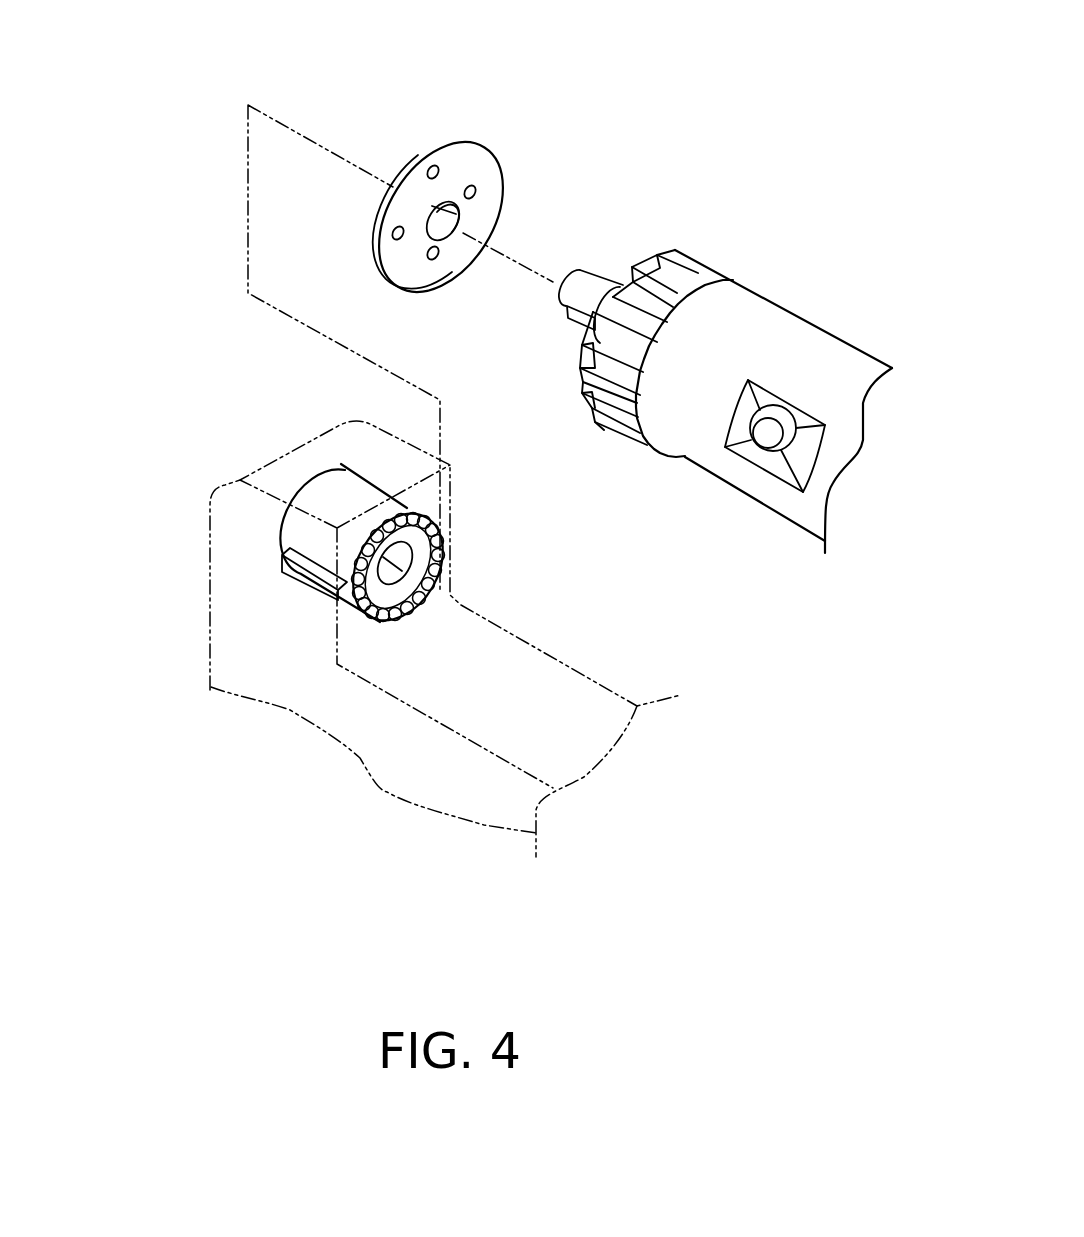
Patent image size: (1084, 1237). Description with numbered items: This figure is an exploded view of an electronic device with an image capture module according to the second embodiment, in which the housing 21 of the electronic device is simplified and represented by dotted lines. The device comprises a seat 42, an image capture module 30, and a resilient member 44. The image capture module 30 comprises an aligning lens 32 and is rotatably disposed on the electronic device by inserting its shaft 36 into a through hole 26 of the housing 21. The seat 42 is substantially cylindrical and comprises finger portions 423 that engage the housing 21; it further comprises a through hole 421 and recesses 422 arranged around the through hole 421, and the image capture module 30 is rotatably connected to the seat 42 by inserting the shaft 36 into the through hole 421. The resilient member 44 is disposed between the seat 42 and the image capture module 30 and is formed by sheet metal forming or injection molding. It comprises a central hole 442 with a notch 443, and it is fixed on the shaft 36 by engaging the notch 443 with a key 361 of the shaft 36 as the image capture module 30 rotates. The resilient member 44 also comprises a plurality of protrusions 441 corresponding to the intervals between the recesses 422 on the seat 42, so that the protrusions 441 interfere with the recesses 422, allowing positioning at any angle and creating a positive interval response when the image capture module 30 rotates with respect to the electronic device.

The housing 21 is at (257, 528).
The through hole 26 is at (380, 573).
The image capture module 30 is at (728, 334).
The aligning lens 32 is at (770, 432).
The shaft 36 is at (636, 229).
The key 361 is at (582, 318).
The seat 42 is at (264, 672).
The through hole 421 is at (340, 603).
The recesses 422 is at (380, 603).
The finger portions 423 is at (303, 583).
The resilient member 44 is at (443, 166).
The protrusions 441 is at (417, 163).
The central hole 442 is at (425, 233).
The notch 443 is at (425, 233).